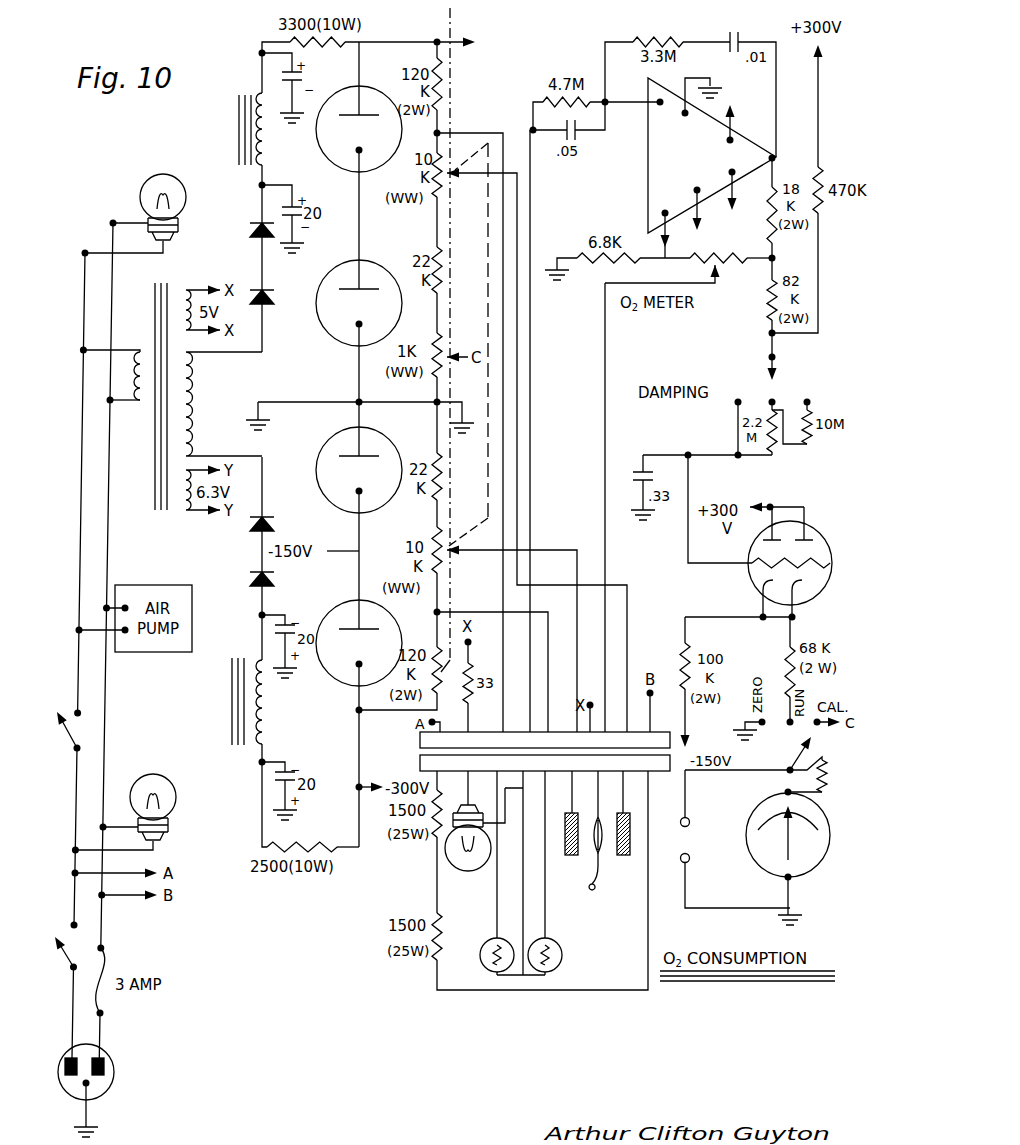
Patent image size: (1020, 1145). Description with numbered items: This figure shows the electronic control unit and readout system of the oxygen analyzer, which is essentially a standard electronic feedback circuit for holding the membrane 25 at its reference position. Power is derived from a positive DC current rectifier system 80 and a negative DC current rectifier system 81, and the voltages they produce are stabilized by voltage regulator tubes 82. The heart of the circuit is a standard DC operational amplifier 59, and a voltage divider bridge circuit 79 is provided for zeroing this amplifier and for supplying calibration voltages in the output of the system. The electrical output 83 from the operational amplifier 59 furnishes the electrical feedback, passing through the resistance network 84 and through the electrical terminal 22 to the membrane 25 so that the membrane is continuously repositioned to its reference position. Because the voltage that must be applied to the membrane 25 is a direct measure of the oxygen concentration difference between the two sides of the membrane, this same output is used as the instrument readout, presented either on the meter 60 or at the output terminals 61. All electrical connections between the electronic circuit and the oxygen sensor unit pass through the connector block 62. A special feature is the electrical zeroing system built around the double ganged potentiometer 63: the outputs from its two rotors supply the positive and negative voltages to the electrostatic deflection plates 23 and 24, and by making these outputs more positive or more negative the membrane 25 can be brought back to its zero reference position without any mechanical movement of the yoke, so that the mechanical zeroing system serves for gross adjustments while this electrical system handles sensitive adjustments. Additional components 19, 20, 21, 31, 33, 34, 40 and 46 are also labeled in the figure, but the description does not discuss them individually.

The lead wire 19 is at (523, 902).
The lead wire 20 is at (497, 904).
The lead wire 21 is at (545, 911).
The electrical terminal 22 is at (600, 784).
The electrostatic deflection plate 23 is at (623, 784).
The electrostatic deflection plate 24 is at (572, 790).
The membrane 25 is at (598, 875).
The thermistor lead 31 is at (600, 885).
The heater resistor 33 is at (568, 848).
The heater resistor 34 is at (628, 848).
The lamp 40 is at (472, 866).
The thermistor 46 is at (483, 964).
The DC operational amplifier 59 is at (648, 166).
The meter 60 is at (806, 852).
The output terminals 61 is at (701, 852).
The connector block 62 is at (416, 770).
The double ganged potentiometer 63 is at (488, 338).
The voltage divider bridge circuit 79 is at (478, 30).
The positive DC current rectifier system 80 is at (268, 297).
The negative DC current rectifier system 81 is at (250, 583).
The voltage regulator tubes 82 is at (344, 158).
The electrical output 83 is at (775, 160).
The resistance network 84 is at (768, 246).